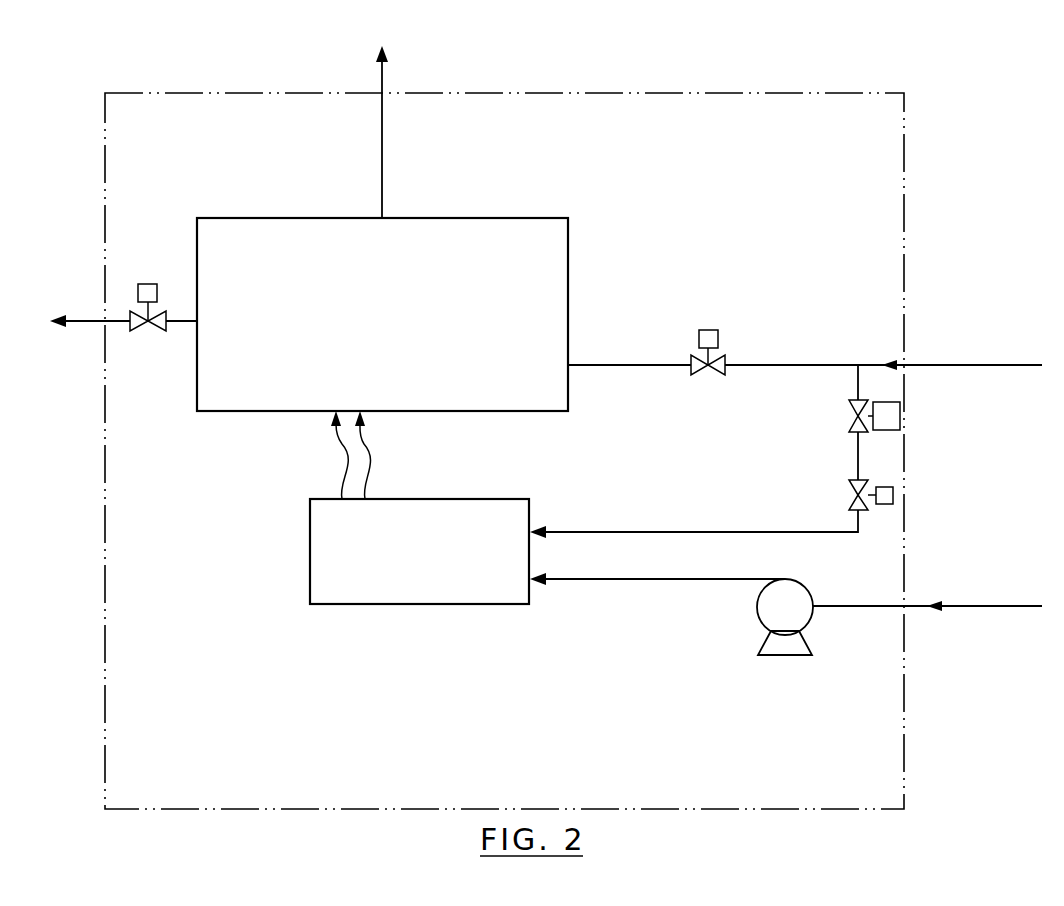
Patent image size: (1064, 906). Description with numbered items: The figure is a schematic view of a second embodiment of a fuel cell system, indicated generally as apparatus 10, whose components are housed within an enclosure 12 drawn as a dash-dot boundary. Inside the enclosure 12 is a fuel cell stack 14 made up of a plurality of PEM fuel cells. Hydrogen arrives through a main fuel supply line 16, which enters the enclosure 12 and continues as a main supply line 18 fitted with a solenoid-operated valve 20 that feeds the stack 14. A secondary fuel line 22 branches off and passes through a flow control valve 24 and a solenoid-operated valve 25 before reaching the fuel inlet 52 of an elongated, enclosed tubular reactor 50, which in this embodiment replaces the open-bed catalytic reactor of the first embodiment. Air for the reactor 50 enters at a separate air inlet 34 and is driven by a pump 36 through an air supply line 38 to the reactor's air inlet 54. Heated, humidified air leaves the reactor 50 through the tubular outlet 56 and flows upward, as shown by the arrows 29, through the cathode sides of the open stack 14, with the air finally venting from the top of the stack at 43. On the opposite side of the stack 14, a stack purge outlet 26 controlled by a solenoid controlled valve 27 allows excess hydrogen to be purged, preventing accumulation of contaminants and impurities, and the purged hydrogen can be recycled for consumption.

The apparatus 10 is at (577, 90).
The enclosure 12 is at (905, 185).
The fuel cell stack 14 is at (568, 252).
The main fuel supply line 16 is at (1024, 365).
The main supply line 18 is at (797, 365).
The solenoid-operated valve 20 is at (708, 330).
The secondary fuel line 22 is at (700, 532).
The flow control valve 24 is at (900, 416).
The solenoid-operated valve 25 is at (893, 495).
The stack purge outlet 26 is at (120, 322).
The solenoid controlled valve 27 is at (148, 284).
The arrows 29 is at (338, 447).
The air inlet 34 is at (975, 606).
The pump 36 is at (805, 596).
The air supply line 38 is at (642, 580).
The air vent 43 is at (382, 168).
The tubular reactor 50 is at (355, 594).
The fuel inlet 52 is at (562, 532).
The air inlet 54 is at (562, 580).
The tubular outlet 56 is at (318, 497).